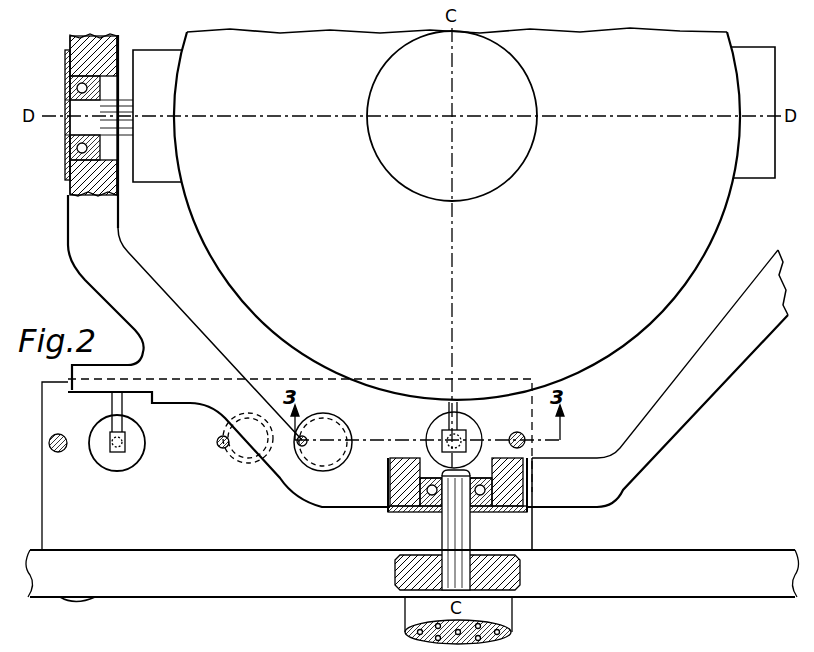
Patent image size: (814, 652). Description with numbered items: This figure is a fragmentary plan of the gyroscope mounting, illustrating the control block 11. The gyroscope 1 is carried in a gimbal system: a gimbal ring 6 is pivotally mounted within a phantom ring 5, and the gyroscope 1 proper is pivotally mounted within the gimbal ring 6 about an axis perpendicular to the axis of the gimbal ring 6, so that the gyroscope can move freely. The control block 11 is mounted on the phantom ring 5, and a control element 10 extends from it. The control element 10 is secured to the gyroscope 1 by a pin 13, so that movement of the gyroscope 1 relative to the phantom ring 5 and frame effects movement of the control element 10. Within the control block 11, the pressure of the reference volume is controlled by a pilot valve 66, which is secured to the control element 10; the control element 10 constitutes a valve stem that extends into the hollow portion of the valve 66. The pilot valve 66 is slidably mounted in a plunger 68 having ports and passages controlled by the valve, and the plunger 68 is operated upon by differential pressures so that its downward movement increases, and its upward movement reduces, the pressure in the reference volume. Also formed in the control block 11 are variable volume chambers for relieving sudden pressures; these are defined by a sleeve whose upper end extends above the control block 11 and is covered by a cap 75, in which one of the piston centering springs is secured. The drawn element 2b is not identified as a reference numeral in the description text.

The gyroscope 1 is at (454, 214).
The phantom ring 5 is at (182, 587).
The gimbal ring 6 is at (153, 312).
The control element 10 is at (470, 438).
The control block 11 is at (540, 530).
The pin 13 is at (448, 410).
The pilot valve 66 is at (445, 438).
The plunger 68 is at (535, 458).
The cap 75 is at (328, 450).
The column 2b is at (500, 607).